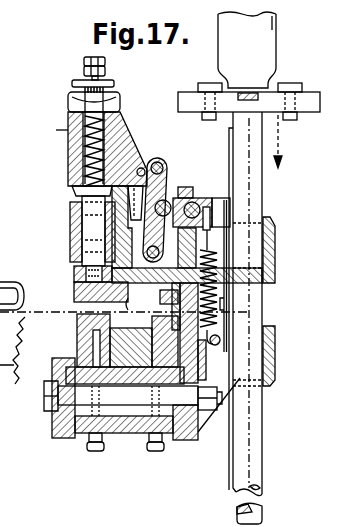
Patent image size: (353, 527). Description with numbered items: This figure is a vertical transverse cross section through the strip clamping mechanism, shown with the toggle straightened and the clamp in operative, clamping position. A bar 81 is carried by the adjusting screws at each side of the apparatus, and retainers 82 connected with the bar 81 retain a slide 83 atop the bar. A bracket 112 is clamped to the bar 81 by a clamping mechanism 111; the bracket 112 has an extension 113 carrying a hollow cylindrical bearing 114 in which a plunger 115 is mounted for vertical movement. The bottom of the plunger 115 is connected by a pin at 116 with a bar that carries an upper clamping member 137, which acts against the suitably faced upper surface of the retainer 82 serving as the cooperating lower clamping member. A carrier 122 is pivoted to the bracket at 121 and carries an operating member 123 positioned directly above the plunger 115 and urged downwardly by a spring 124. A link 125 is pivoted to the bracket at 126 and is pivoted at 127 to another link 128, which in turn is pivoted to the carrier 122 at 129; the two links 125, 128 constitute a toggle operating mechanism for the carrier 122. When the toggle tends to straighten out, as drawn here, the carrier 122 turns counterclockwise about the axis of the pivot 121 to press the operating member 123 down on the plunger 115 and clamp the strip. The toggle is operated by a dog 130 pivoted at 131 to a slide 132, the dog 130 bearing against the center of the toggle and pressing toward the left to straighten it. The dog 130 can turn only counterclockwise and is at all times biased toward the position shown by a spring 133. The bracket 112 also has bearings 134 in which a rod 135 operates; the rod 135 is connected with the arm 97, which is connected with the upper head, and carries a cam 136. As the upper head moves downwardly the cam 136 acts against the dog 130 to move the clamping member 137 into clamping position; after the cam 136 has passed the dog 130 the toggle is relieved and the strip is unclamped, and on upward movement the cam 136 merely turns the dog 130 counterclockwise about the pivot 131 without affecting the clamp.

The arm 97 is at (277, 49).
The slide 132 is at (236, 192).
The rod 135 is at (263, 445).
The bearings 134 is at (265, 262).
The cam 136 is at (227, 352).
The carrier 122 is at (66, 130).
The spring 124 is at (90, 152).
The pivot 121 is at (138, 170).
The operating member 123 is at (78, 192).
The plunger 115 is at (90, 211).
The hollow cylindrical bearing 114 is at (78, 233).
The link 125 is at (124, 248).
The pin 116 is at (76, 275).
The extension 113 is at (80, 290).
The upper clamping member 137 is at (78, 302).
The retainers 82 is at (68, 352).
The bar 81 is at (58, 380).
The clamping mechanism 111 is at (68, 398).
The slide 83 is at (133, 372).
The bracket 112 is at (191, 440).
The link 128 is at (160, 178).
The pivot 129 is at (153, 165).
The pivot 127 is at (163, 204).
The pivot 126 is at (112, 250).
The dog 130 is at (230, 212).
The pivot 131 is at (216, 185).
The spring 133 is at (208, 308).